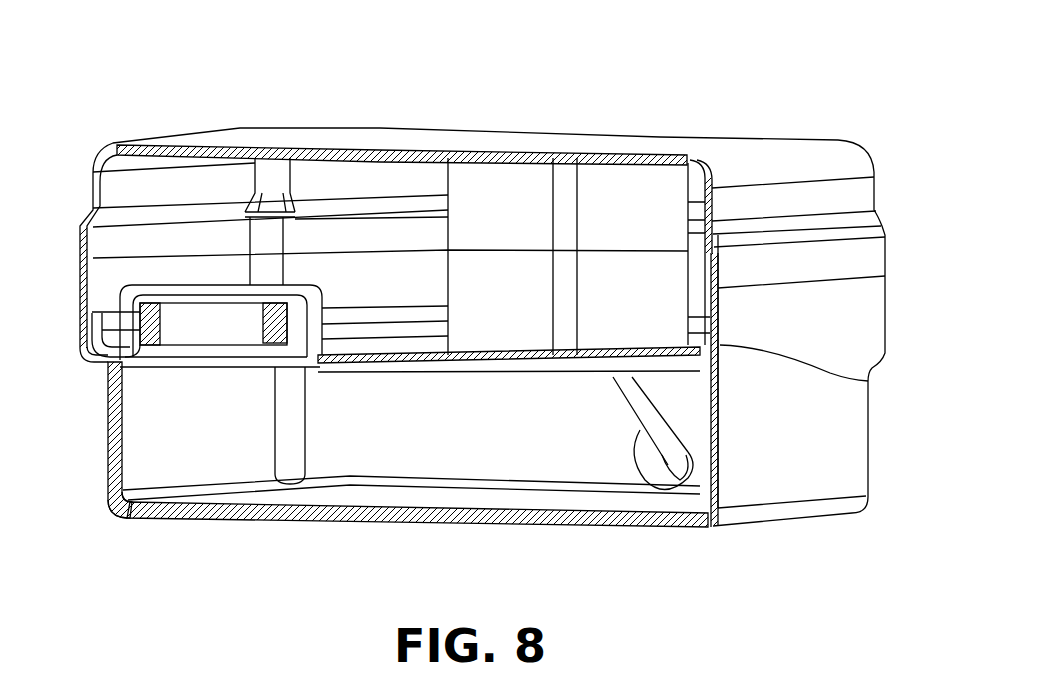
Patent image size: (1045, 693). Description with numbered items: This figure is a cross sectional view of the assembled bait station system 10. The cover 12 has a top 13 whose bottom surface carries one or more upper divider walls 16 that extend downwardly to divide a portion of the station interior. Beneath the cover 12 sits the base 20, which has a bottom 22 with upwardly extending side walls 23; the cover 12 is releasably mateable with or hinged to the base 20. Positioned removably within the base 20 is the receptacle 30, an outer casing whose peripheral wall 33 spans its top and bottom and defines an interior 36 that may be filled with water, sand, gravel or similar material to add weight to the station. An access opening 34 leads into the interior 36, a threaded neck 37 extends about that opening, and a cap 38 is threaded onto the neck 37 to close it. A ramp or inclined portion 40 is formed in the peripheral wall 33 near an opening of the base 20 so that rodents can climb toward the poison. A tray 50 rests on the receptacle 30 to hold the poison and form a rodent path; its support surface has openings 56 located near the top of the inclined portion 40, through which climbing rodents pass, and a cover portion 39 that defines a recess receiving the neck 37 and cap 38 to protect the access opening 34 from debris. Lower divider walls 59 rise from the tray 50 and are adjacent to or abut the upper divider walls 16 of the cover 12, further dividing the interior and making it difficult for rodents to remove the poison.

The bait station system 10 is at (210, 64).
The cover 12 is at (847, 193).
The top 13 is at (612, 147).
The upper divider walls 16 is at (488, 190).
The base 20 is at (110, 437).
The bottom 22 is at (532, 525).
The side walls 23 is at (793, 487).
The receptacle 30 is at (110, 483).
The peripheral wall 33 is at (170, 468).
The access opening 34 is at (176, 327).
The interior 36 is at (582, 473).
The threaded neck 37 is at (287, 380).
The cap 38 is at (140, 312).
The cover portion 39 is at (130, 330).
The ramp or inclined portion 40 is at (650, 480).
The tray 50 is at (377, 347).
The openings 56 is at (868, 381).
The lower divider walls 59 is at (490, 342).